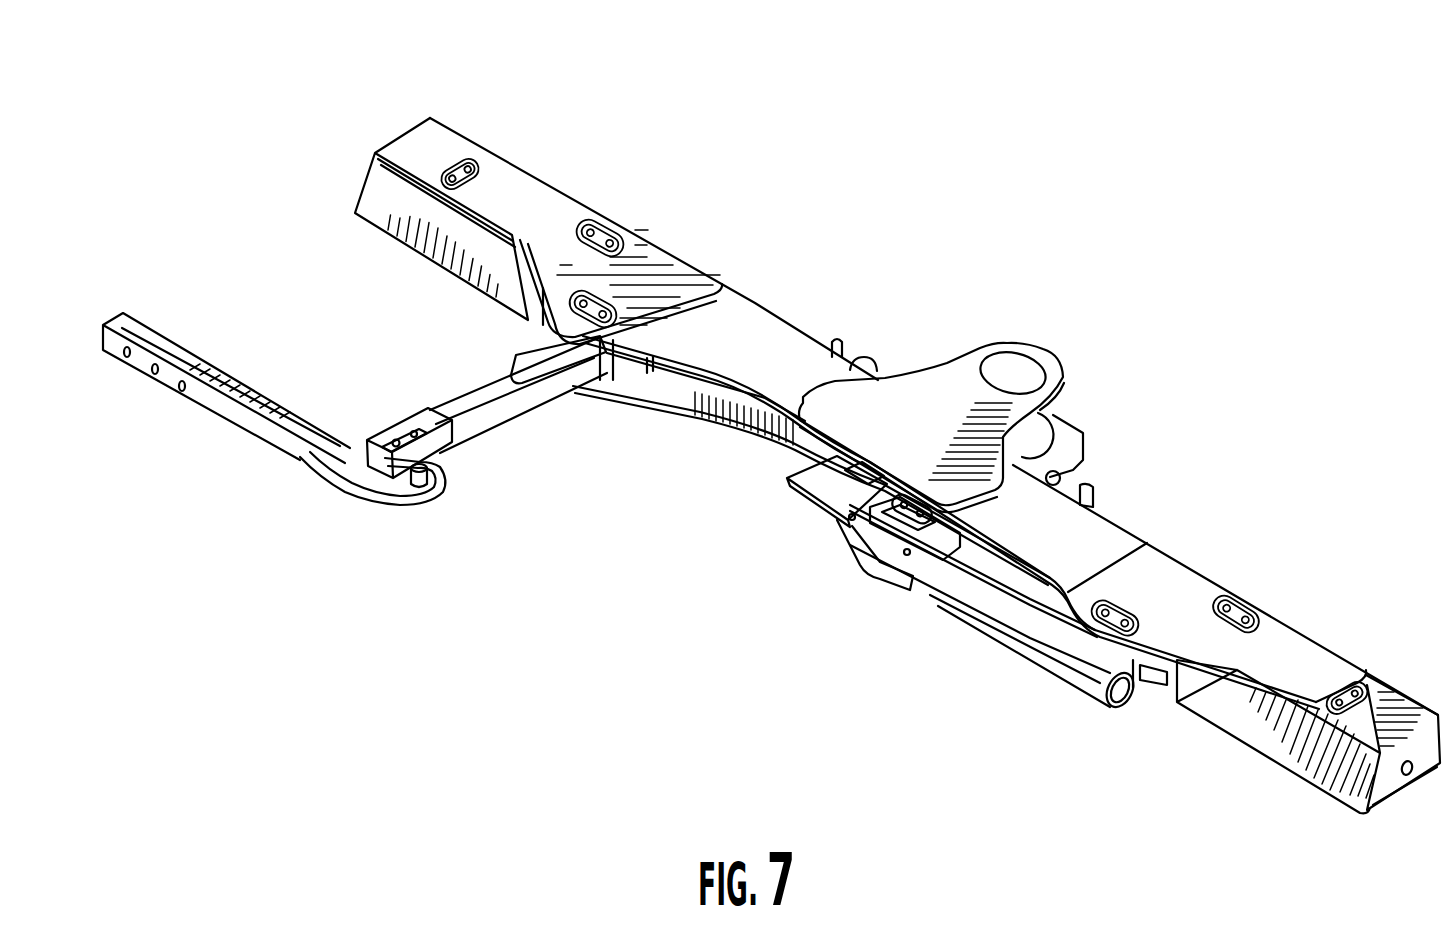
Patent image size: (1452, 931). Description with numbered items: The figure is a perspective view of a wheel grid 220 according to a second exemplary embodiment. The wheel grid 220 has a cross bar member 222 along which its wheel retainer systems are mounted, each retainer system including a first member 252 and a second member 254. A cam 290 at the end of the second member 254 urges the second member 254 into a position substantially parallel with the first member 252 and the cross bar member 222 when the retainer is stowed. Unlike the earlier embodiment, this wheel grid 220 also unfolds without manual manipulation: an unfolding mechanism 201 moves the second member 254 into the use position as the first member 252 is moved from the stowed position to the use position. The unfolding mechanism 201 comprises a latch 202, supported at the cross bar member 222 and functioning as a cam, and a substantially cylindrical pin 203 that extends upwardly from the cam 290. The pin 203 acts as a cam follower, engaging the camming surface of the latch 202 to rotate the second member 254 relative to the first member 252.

The wheel grid 220 is at (619, 151).
The cross bar member 222 is at (757, 345).
The first member 252 is at (512, 423).
The second member 254 is at (212, 408).
The cam 290 is at (362, 491).
The pin 203 is at (437, 471).
The latch 202 is at (795, 495).
The unfolding mechanism 201 is at (814, 530).